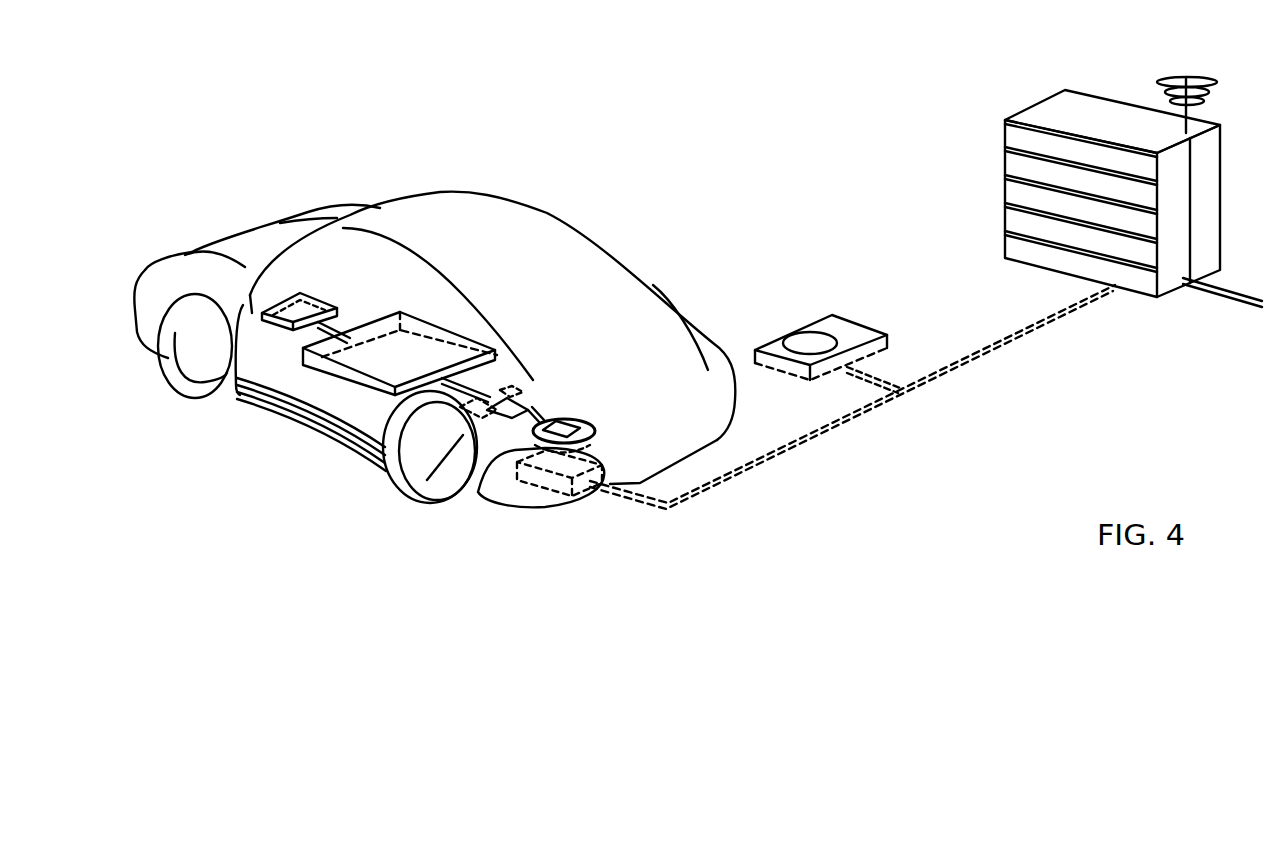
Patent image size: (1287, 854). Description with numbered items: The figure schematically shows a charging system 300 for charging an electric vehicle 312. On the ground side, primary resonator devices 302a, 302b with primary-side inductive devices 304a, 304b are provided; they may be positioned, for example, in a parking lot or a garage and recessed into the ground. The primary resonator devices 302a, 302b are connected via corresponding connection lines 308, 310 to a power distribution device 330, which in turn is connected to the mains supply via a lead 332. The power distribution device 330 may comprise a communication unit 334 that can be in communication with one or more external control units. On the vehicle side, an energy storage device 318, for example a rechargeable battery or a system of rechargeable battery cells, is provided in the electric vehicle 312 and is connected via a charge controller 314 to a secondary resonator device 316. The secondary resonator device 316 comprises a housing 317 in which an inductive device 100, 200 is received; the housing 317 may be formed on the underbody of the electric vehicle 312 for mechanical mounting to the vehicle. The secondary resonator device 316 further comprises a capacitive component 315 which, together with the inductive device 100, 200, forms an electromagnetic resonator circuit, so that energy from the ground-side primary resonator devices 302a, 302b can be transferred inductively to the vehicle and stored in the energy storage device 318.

The charging system 300 is at (408, 60).
The electric vehicle 312 is at (243, 238).
The charge controller 314 is at (303, 348).
The capacitive component 315 is at (421, 484).
The secondary resonator device 316 is at (601, 382).
The housing 317 is at (590, 412).
The inductive device 100 is at (533, 374).
The inductive device 200 is at (548, 415).
The energy storage device 318 is at (318, 297).
The primary resonator device 302a is at (477, 498).
The primary-side inductive device 304a is at (596, 470).
The primary resonator device 302b is at (772, 340).
The primary-side inductive device 304b is at (818, 336).
The connection line 308 is at (994, 326).
The connection line 310 is at (995, 350).
The power distribution device 330 is at (1040, 108).
The lead 332 is at (1247, 300).
The communication unit 334 is at (1186, 73).